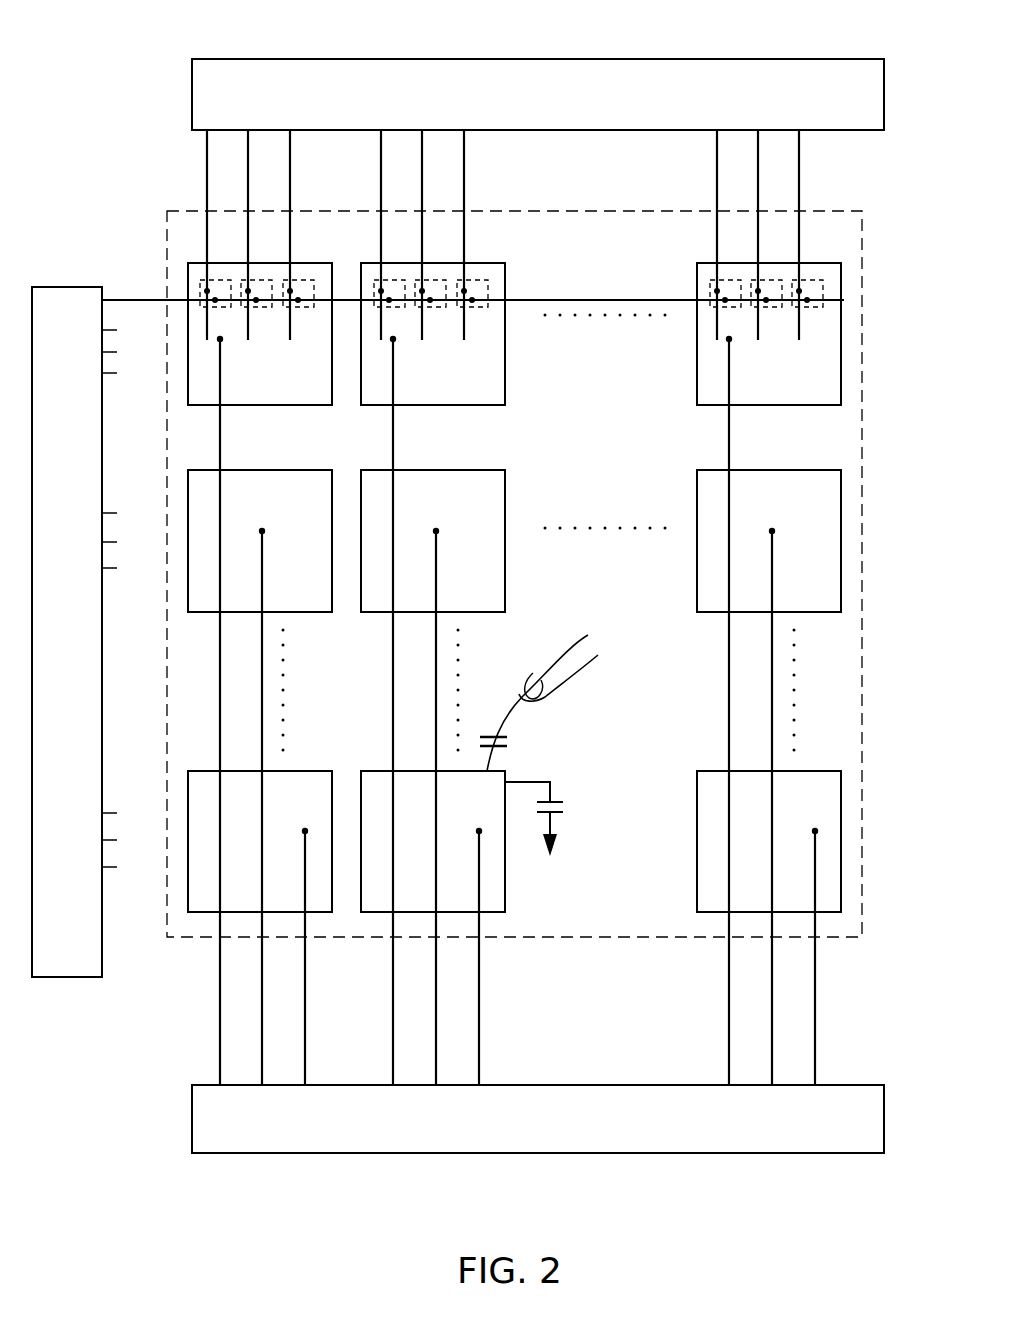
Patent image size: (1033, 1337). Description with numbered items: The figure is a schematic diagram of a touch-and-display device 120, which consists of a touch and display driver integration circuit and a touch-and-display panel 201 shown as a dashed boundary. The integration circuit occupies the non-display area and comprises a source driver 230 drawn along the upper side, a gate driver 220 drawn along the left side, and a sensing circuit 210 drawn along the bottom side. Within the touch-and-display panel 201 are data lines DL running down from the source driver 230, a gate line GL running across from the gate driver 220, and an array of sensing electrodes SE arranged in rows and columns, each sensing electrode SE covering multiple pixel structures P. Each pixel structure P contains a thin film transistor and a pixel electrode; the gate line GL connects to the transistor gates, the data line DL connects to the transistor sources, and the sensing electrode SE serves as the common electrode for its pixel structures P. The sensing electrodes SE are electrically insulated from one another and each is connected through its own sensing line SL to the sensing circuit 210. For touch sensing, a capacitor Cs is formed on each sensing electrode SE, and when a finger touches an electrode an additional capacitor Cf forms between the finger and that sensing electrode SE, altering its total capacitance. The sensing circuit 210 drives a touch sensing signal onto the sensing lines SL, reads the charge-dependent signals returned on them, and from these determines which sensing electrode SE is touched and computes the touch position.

The touch-and-display device 120 is at (104, 30).
The source driver 230 is at (192, 93).
The gate driver 220 is at (63, 978).
The sensing circuit 210 is at (660, 1131).
The touch-and-display panel 201 is at (862, 682).
The gate line GL is at (126, 298).
The data line DL is at (207, 158).
The pixel structure P is at (221, 280).
The sensing electrode SE is at (288, 406).
The sensing line SL is at (305, 1035).
The capacitor formed between finger and sensing electrode Cf is at (539, 703).
The capacitor formed on sensing electrode Cs is at (554, 819).